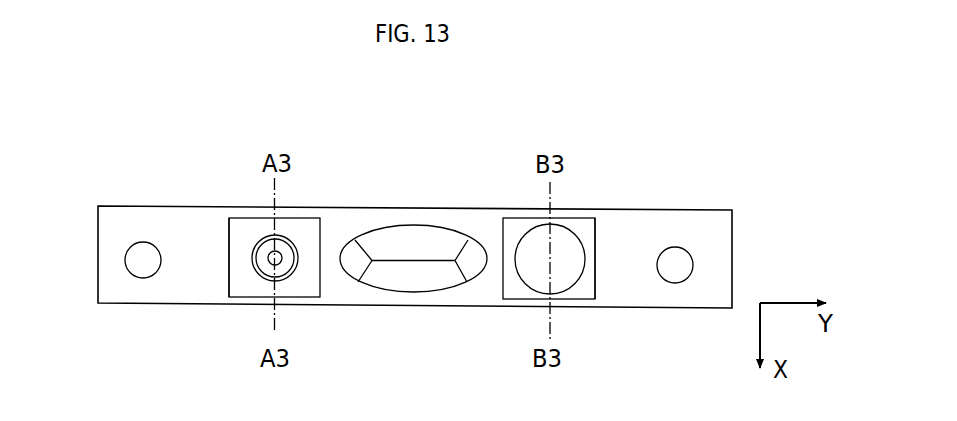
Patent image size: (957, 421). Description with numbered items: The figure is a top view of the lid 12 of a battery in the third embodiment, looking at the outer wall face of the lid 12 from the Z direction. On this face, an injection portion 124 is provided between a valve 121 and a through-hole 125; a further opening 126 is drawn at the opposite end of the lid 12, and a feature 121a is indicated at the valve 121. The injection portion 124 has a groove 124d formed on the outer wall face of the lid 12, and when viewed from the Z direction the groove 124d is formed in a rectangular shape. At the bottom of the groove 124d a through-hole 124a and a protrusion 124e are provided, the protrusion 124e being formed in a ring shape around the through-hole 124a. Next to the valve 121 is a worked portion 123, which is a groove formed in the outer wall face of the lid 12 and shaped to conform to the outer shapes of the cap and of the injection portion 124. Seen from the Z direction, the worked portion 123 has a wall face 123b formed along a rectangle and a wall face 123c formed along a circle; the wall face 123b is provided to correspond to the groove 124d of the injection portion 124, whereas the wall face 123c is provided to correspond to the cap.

The lid 12 is at (749, 178).
The valve 121 is at (415, 295).
The recessed portion 121a is at (408, 260).
The worked portion 123 is at (600, 286).
The wall face 123b is at (598, 236).
The wall face 123c is at (519, 279).
The injection portion 124 is at (323, 288).
The through-hole 124a is at (268, 264).
The groove 124d is at (228, 262).
The protrusion 124e is at (258, 250).
The through-hole 125 is at (143, 242).
The positioning hole 126 is at (675, 247).